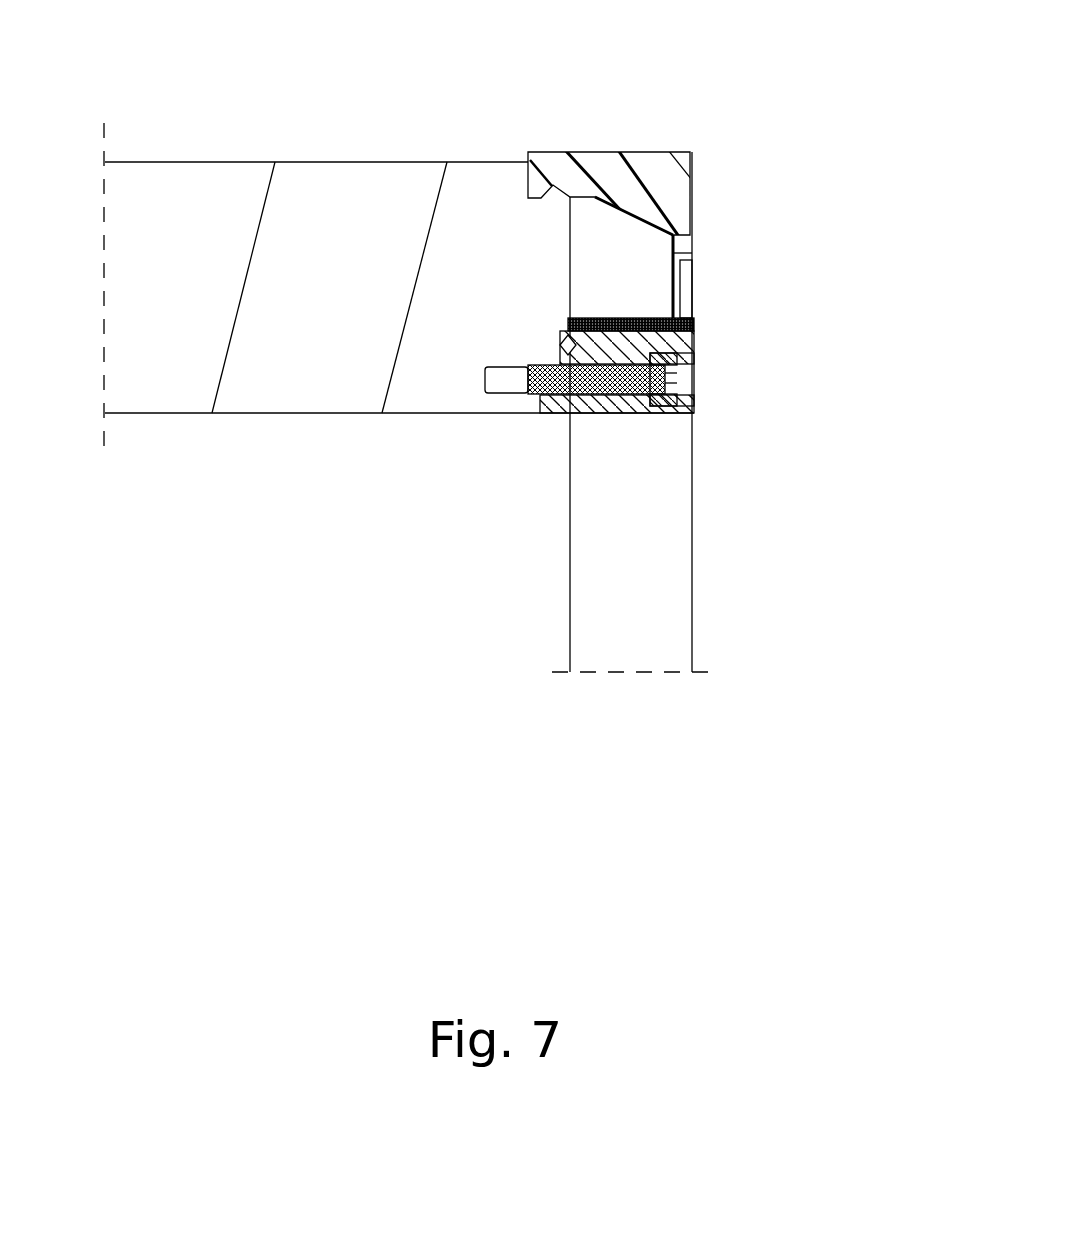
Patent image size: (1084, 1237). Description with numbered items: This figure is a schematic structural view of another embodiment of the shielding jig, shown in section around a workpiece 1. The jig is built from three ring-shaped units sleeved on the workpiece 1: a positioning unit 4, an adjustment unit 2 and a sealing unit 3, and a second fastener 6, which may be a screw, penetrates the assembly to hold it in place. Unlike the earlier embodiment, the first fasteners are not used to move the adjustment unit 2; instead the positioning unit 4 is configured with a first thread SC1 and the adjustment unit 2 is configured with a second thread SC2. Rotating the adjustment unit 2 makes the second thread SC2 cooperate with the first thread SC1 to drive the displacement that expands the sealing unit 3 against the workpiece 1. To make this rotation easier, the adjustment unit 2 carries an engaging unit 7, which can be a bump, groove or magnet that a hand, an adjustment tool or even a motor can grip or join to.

The workpiece 1 is at (318, 226).
The adjustment unit 2 is at (627, 243).
The sealing unit 3 is at (608, 162).
The positioning unit 4 is at (694, 333).
The second fastener 6 is at (695, 398).
The engaging unit 7 is at (682, 276).
The first thread SC1 is at (567, 388).
The second thread SC2 is at (628, 314).